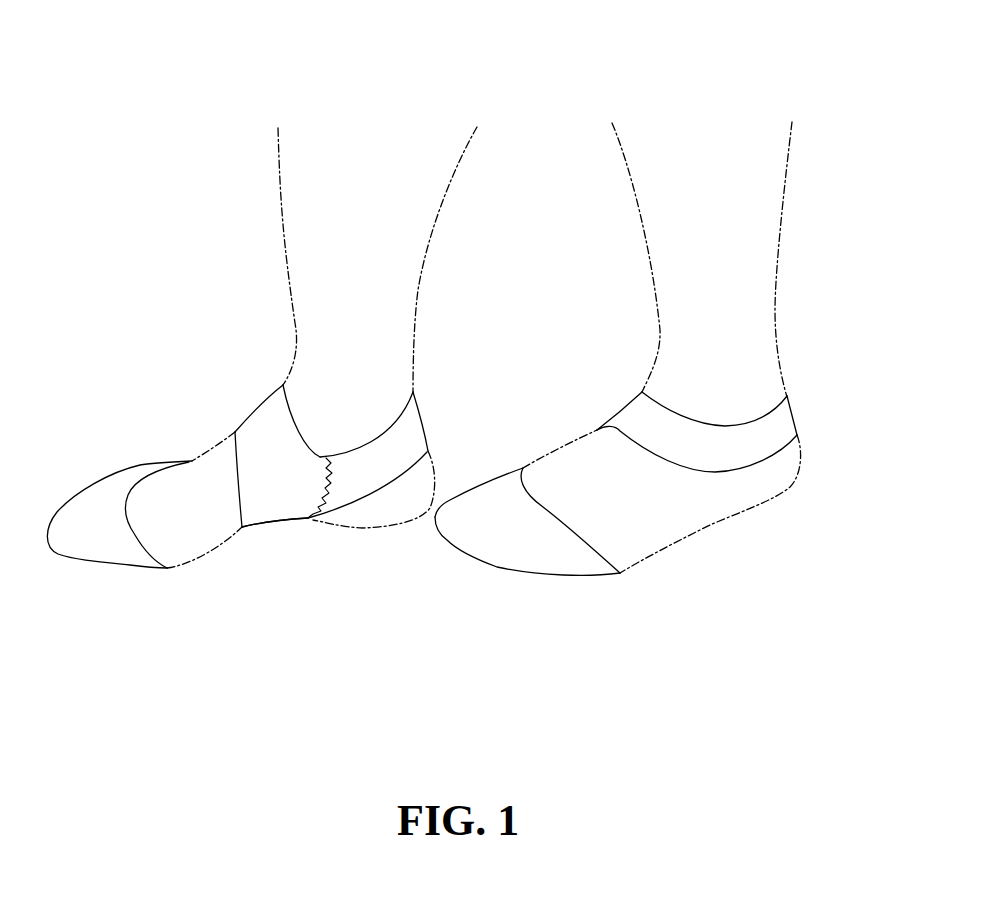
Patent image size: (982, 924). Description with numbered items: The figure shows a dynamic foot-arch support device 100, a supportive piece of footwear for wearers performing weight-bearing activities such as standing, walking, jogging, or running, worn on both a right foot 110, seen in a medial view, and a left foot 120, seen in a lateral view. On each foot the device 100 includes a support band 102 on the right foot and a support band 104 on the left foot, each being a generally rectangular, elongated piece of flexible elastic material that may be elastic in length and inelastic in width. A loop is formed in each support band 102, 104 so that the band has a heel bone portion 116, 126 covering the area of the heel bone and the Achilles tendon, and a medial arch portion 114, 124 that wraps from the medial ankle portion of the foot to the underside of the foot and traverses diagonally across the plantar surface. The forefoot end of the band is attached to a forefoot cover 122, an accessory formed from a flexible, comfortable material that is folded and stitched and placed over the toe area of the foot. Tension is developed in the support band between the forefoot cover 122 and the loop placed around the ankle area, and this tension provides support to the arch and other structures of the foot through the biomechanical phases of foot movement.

The dynamic foot-arch support device 100 is at (454, 96).
The support band 102 is at (354, 478).
The support band 104 is at (735, 451).
The right foot 110 is at (144, 402).
The medial arch portion 114 is at (293, 510).
The heel bone portion 116 is at (417, 436).
The left foot 120 is at (752, 581).
The forefoot cover 122 is at (472, 547).
The medial arch portion 124 is at (597, 430).
The heel bone portion 126 is at (780, 418).